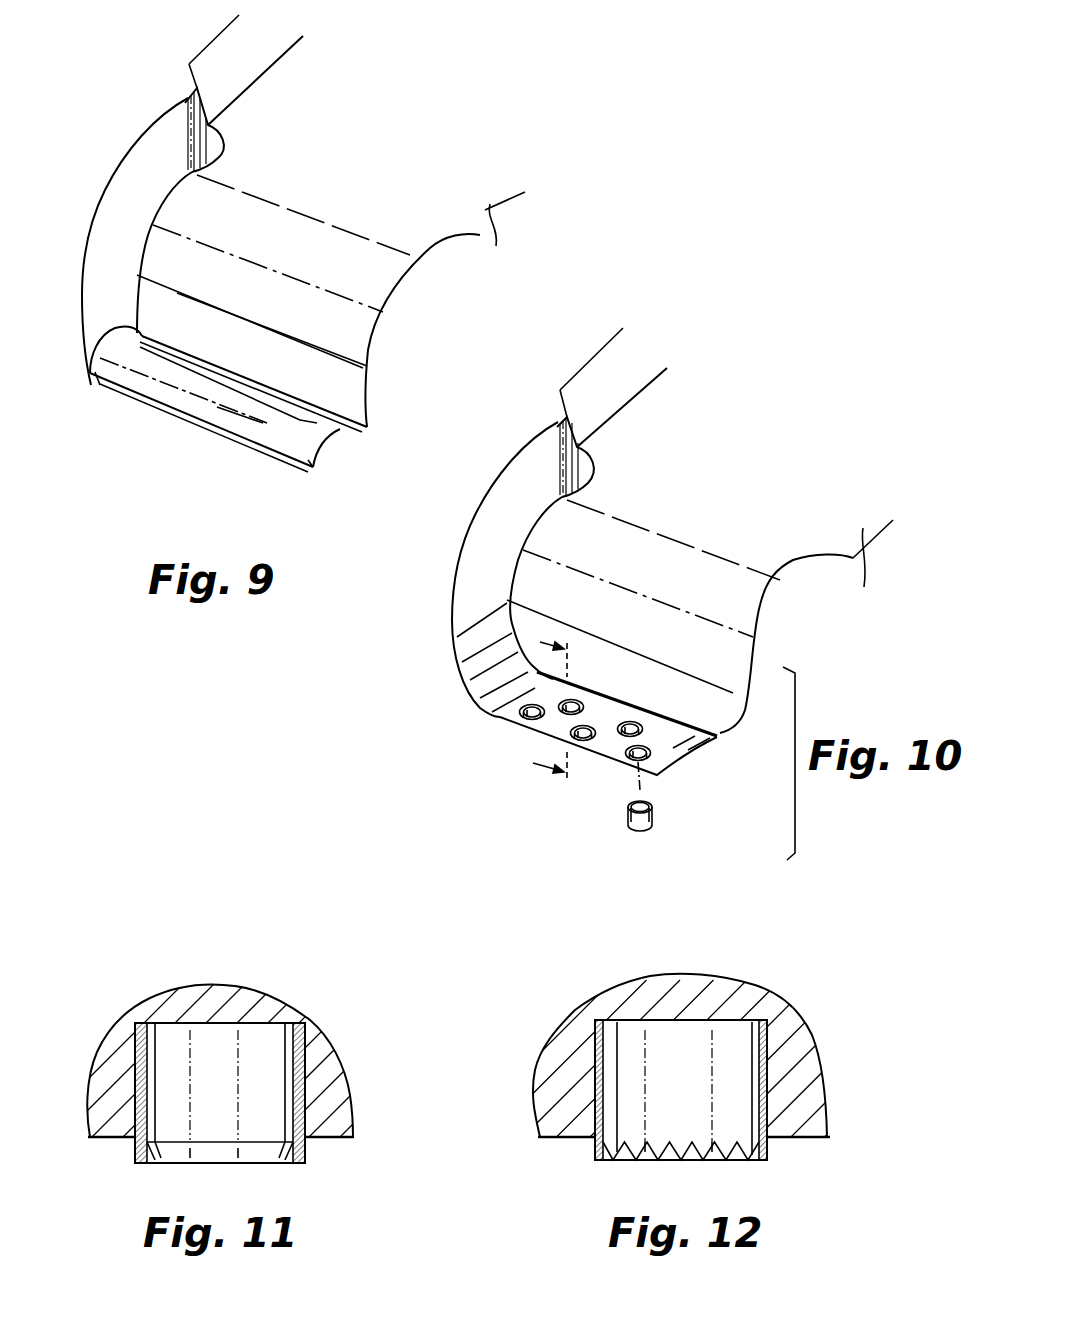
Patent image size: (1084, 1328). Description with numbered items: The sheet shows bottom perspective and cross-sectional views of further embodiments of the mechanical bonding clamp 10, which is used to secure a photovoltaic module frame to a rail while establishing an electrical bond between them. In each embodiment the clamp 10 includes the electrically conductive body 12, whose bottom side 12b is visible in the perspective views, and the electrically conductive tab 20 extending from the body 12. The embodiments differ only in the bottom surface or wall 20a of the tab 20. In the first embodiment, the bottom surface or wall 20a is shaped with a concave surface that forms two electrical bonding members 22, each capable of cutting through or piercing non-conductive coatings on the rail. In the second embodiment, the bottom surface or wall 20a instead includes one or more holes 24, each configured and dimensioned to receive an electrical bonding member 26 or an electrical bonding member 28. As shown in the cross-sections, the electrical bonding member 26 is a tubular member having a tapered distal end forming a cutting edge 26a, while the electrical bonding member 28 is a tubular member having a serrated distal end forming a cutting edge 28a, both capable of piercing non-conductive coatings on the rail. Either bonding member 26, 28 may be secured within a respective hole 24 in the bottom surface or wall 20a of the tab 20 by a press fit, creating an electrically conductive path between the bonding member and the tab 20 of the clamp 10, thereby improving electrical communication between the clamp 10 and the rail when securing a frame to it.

In FIG. 9, the clamp 10 is at (97, 143).
In FIG. 10, the clamp 10 is at (493, 463).
In FIG. 9, the electrically conductive body 12 is at (192, 40).
In FIG. 10, the electrically conductive body 12 is at (568, 366).
In FIG. 9, the bottom side 12b is at (496, 228).
In FIG. 10, the bottom side 12b is at (867, 568).
In FIG. 9, the electrically conductive tab 20 is at (75, 265).
In FIG. 10, the electrically conductive tab 20 is at (448, 622).
In FIG. 11, the electrically conductive tab 20 is at (117, 1048).
In FIG. 12, the electrically conductive tab 20 is at (568, 1052).
In FIG. 9, the bottom surface or wall 20a is at (205, 383).
In FIG. 10, the bottom surface or wall 20a is at (673, 750).
In FIG. 11, the bottom surface or wall 20a is at (97, 1140).
In FIG. 12, the bottom surface or wall 20a is at (548, 1140).
In FIG. 9, the electrical bonding member 22 is at (113, 389).
In FIG. 10, the hole 24 is at (648, 740).
In FIG. 11, the hole 24 is at (218, 1025).
In FIG. 12, the hole 24 is at (686, 1020).
In FIG. 10, the electrical bonding member 26 is at (518, 714).
In FIG. 11, the electrical bonding member 26 is at (132, 1148).
In FIG. 11, the cutting edge 26a is at (288, 1163).
In FIG. 12, the electrical bonding member 28 is at (588, 1147).
In FIG. 12, the cutting edge 28a is at (748, 1160).